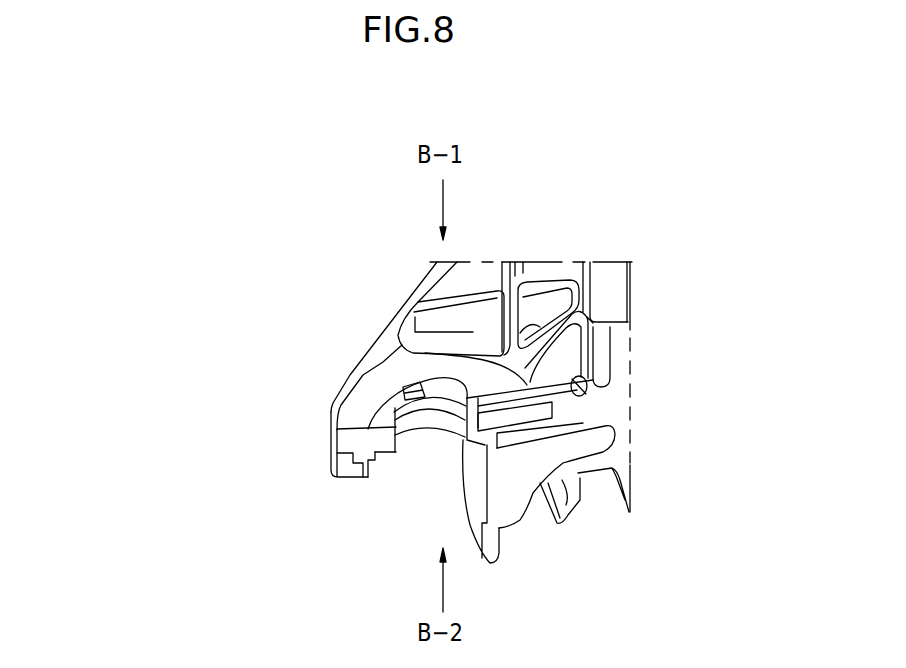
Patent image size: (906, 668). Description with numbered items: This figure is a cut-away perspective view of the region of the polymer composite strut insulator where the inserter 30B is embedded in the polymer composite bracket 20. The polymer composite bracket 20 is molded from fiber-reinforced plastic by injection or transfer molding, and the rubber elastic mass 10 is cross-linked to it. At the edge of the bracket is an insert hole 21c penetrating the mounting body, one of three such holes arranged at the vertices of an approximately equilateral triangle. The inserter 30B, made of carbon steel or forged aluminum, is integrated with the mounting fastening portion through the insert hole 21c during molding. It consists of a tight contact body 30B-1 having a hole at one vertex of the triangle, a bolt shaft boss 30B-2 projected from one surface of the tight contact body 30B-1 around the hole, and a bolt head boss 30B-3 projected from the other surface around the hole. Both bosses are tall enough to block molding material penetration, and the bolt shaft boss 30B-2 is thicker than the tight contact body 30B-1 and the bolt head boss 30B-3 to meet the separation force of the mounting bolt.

The elastic mass 10 is at (505, 475).
The polymer composite bracket 20 is at (523, 278).
The insert hole 21c is at (572, 392).
The inserter 30B is at (120, 345).
The tight contact body 30B-1 is at (356, 457).
The bolt shaft boss 30B-2 is at (381, 437).
The bolt head boss 30B-3 is at (365, 472).